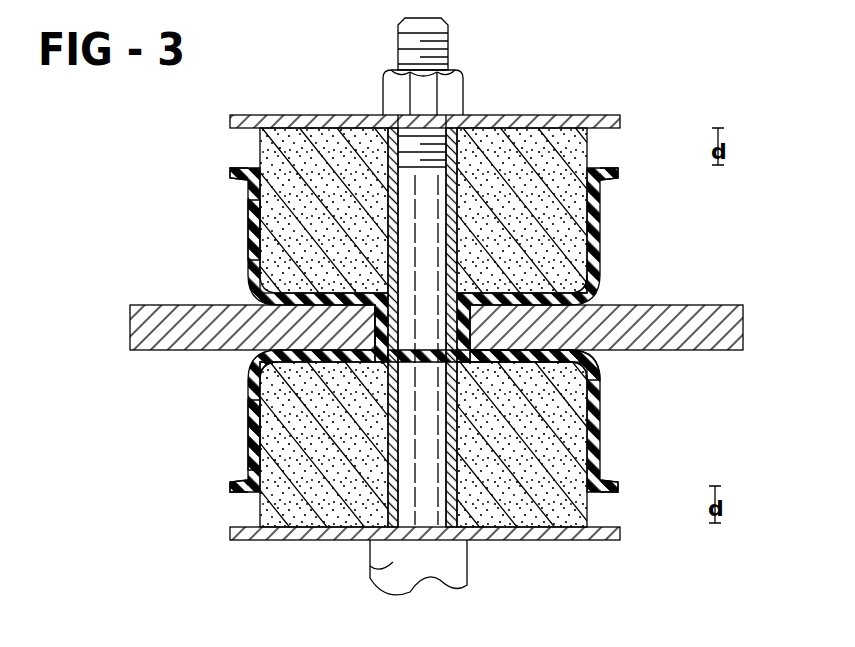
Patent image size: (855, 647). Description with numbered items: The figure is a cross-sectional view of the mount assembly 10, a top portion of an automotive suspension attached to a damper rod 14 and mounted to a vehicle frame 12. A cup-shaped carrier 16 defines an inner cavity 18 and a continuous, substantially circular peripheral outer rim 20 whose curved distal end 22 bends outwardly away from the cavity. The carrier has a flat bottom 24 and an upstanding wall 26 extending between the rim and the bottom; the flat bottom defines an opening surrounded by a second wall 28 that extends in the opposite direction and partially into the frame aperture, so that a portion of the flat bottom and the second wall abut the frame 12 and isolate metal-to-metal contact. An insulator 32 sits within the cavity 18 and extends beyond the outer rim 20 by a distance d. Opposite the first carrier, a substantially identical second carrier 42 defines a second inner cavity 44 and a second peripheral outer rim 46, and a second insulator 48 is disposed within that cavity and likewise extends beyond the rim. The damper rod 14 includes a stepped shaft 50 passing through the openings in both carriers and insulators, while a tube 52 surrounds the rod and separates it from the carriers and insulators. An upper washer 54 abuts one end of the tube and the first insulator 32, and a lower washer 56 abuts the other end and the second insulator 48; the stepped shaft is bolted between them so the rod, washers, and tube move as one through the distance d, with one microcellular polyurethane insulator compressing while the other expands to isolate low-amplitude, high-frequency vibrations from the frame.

The mount assembly 10 is at (130, 397).
The frame 12 is at (672, 305).
The damper rod 14 is at (370, 563).
The carrier 16 is at (600, 209).
The inner cavity 18 is at (262, 243).
The peripheral outer rim 20 is at (608, 172).
The curved distal end 22 is at (235, 168).
The flat bottom 24 is at (575, 260).
The upstanding wall 26 is at (598, 224).
The second wall 28 is at (375, 321).
The insulator 32 is at (540, 160).
The second carrier 42 is at (600, 444).
The second inner cavity 44 is at (583, 410).
The second peripheral outer rim 46 is at (600, 490).
The second insulator 48 is at (500, 490).
The stepped shaft 50 is at (449, 37).
The tube 52 is at (460, 160).
The upper washer 54 is at (305, 115).
The lower washer 56 is at (260, 540).